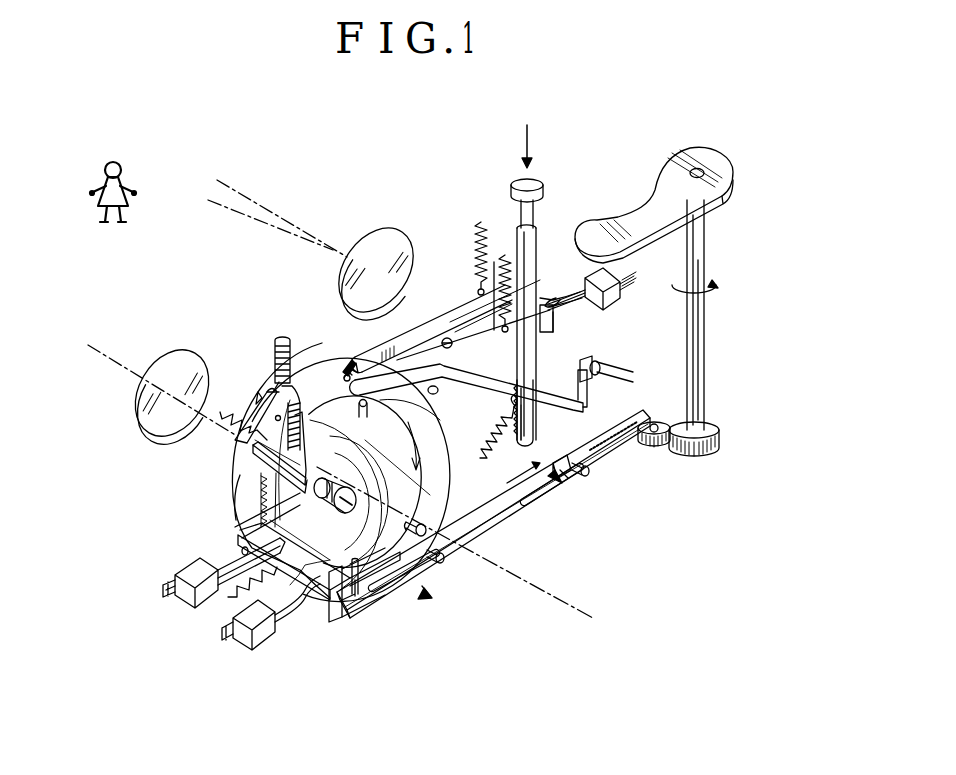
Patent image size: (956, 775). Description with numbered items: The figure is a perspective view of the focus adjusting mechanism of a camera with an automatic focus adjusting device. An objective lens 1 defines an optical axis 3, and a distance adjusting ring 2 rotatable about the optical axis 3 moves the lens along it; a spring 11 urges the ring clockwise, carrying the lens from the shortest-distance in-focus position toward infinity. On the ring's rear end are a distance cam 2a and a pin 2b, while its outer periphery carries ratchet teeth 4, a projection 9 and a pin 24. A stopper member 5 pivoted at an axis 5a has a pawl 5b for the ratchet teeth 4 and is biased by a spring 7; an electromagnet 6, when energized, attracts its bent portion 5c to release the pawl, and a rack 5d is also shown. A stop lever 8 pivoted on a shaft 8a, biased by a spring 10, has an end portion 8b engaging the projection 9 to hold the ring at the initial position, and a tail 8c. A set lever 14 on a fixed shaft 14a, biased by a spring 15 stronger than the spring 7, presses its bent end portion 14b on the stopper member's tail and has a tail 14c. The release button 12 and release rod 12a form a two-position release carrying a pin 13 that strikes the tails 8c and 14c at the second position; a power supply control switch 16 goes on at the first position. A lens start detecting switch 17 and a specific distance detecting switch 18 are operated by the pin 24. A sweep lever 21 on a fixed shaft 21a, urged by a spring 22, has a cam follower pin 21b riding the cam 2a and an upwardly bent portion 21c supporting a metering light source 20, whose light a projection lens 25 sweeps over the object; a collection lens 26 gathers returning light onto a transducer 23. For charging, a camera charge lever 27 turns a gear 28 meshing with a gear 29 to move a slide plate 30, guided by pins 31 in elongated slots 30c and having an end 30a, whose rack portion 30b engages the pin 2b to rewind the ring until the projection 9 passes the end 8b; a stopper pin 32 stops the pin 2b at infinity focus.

The objective lens 1 is at (318, 590).
The distance adjusting ring 2 is at (312, 358).
The distance cam 2a is at (338, 395).
The pin 2b is at (426, 530).
The optical axis 3 is at (520, 580).
The ratchet teeth 4 is at (258, 506).
The stopper member 5 is at (254, 384).
The axis 5a is at (258, 392).
The pawl 5b is at (300, 400).
The bent portion 5c is at (268, 380).
The rack 5d is at (258, 482).
The electromagnet 6 is at (282, 340).
The spring 7 is at (222, 422).
The stop lever 8 is at (452, 318).
The shaft 8a is at (440, 330).
The end portion 8b is at (352, 365).
The tail 8c is at (520, 292).
The projection 9 is at (347, 368).
The spring 10 is at (476, 250).
The spring 11 is at (230, 600).
The release button 12 is at (532, 180).
The release rod 12a is at (537, 254).
The pin 13 is at (494, 262).
The set lever 14 is at (414, 388).
The fixed shaft 14a is at (440, 393).
The bent end portion 14b is at (255, 455).
The tail 14c is at (553, 326).
The spring 15 is at (504, 255).
The electrical power supply control switch 16 is at (614, 298).
The lens start detecting switch 17 is at (258, 650).
The specific distance detecting switch 18 is at (193, 606).
The metering light source 20 is at (600, 363).
The sweep lever 21 is at (518, 446).
The fixed shaft 21a is at (446, 338).
The cam follower pin 21b is at (425, 423).
The upwardly bent portion 21c is at (534, 421).
The spring 22 is at (489, 461).
The metering light sensitive transducer 23 is at (380, 586).
The pin 24 is at (300, 596).
The projection lens 25 is at (386, 240).
The collection lens 26 is at (174, 362).
The camera charge lever 27 is at (706, 162).
The gear 28 is at (696, 455).
The gear 29 is at (650, 445).
The slide plate 30 is at (512, 507).
The rail end 30a is at (612, 458).
The rack portion 30b is at (338, 610).
The elongated slots 30c is at (562, 483).
The pins 31 is at (586, 478).
The stopper pin 32 is at (357, 598).